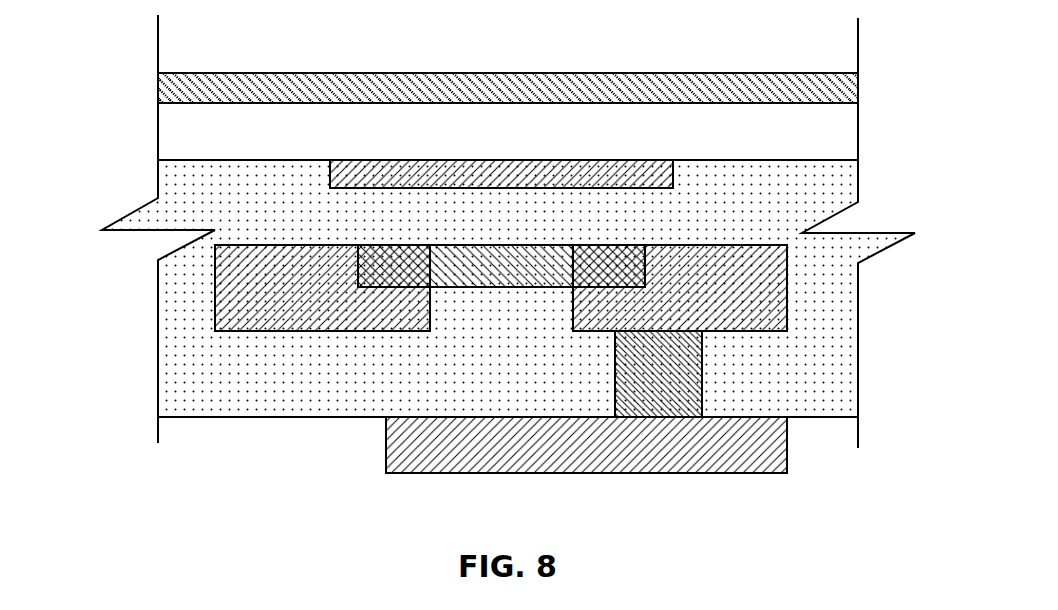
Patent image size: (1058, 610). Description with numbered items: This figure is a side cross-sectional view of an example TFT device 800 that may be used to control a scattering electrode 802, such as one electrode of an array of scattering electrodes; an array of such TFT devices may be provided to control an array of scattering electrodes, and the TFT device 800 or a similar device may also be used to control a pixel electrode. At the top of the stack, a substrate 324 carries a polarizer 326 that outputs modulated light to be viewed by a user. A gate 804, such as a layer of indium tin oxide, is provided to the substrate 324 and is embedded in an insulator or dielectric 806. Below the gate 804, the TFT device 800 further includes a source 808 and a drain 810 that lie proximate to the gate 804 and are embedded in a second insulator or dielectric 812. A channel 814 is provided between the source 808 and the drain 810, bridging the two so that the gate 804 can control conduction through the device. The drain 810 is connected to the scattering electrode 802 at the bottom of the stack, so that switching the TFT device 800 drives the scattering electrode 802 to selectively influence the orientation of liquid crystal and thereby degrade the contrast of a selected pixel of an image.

The TFT device 800 is at (240, 431).
The scattering electrode 802 is at (773, 460).
The gate 804 is at (345, 175).
The insulator or dielectric 806 is at (835, 180).
The source 808 is at (230, 310).
The drain 810 is at (773, 317).
The insulator or dielectric 812 is at (173, 380).
The channel 814 is at (622, 274).
The substrate 324 is at (167, 131).
The polarizer 326 is at (167, 86).